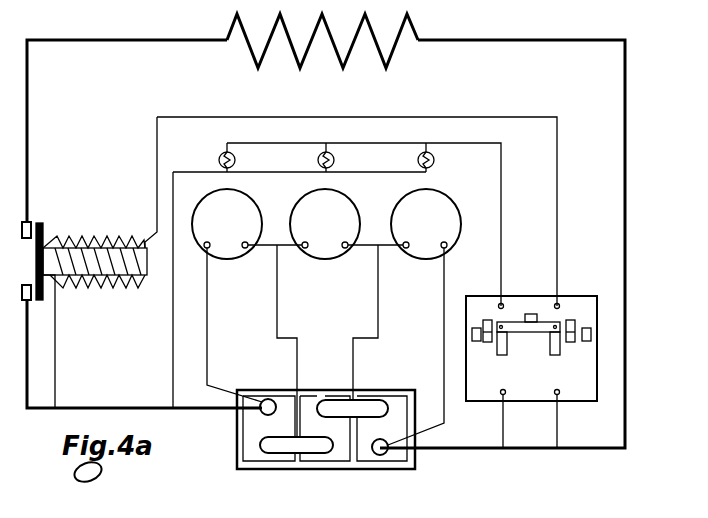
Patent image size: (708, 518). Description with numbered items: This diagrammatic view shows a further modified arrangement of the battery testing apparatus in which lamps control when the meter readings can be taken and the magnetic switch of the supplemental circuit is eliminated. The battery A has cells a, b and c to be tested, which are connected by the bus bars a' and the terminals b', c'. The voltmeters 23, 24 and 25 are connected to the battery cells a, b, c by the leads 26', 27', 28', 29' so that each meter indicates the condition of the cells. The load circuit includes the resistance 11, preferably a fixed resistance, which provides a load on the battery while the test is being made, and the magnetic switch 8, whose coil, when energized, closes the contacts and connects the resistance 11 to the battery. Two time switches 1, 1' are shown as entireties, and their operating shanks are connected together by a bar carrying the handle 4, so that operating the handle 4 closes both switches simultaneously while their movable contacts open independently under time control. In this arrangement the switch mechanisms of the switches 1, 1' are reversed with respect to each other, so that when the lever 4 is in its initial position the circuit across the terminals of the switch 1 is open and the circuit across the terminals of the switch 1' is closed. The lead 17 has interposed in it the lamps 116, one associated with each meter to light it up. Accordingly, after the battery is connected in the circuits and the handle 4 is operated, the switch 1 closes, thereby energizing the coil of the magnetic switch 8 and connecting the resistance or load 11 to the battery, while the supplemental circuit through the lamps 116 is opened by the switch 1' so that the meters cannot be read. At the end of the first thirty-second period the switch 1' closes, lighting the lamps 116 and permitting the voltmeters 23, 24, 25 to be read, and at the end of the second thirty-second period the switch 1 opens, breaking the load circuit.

The time switch 1 is at (538, 372).
The time switch 1' is at (460, 385).
The handle 4 is at (531, 313).
The magnetic switch 8 is at (84, 311).
The resistance 11 is at (388, 62).
The lead 17 is at (503, 246).
The voltmeter 23 is at (247, 211).
The voltmeter 24 is at (348, 211).
The voltmeter 25 is at (450, 217).
The lead 26' is at (234, 325).
The lead 27' is at (295, 341).
The lead 28' is at (354, 322).
The lead 29' is at (416, 346).
The lamps 116 is at (317, 162).
The battery A is at (326, 445).
The cell a is at (252, 428).
The bus bar a' is at (295, 467).
The cell b is at (344, 415).
The terminal b' is at (386, 468).
The cell c is at (379, 447).
The terminal c' is at (268, 392).